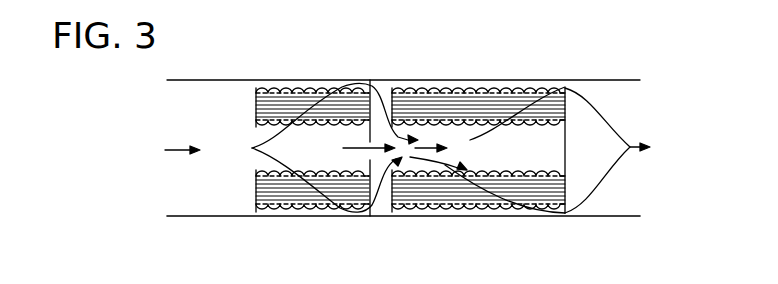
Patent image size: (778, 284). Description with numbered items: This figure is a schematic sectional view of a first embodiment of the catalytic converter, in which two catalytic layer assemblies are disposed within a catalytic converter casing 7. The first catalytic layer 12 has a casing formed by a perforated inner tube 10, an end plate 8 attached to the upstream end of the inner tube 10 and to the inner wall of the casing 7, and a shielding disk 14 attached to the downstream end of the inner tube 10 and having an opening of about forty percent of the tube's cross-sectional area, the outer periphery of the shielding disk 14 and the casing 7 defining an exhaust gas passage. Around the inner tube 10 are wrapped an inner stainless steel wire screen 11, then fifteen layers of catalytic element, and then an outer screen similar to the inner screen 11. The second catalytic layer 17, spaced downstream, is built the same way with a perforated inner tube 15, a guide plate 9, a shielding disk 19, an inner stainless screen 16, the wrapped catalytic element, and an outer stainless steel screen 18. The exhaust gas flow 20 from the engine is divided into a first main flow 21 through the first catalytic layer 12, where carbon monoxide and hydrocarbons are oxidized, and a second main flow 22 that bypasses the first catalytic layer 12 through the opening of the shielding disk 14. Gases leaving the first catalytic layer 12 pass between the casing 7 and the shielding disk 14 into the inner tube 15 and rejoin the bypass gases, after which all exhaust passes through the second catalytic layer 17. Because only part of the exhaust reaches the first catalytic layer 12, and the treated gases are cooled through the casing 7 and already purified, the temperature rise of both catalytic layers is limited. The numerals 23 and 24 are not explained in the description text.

The catalytic converter casing 7 is at (208, 80).
The end plate 8 is at (312, 76).
The guide plate 9 is at (478, 145).
The inner tube 10 is at (292, 207).
The inner stainless steel wire screen 11 is at (280, 231).
The first catalytic layer 12 is at (300, 193).
The shielding disk 14 is at (374, 92).
The inner tube 15 is at (455, 128).
The inner stainless screen 16 is at (478, 187).
The second catalytic layer 17 is at (504, 193).
The outer stainless steel screen 18 is at (444, 88).
The shielding disk 19 is at (567, 140).
The exhaust gas flow 20 is at (164, 151).
The first main flow 21 is at (353, 84).
The second main flow 22 is at (352, 150).
The flow path through second block 23 is at (460, 118).
The lower layer of second upper block 24 is at (545, 86).